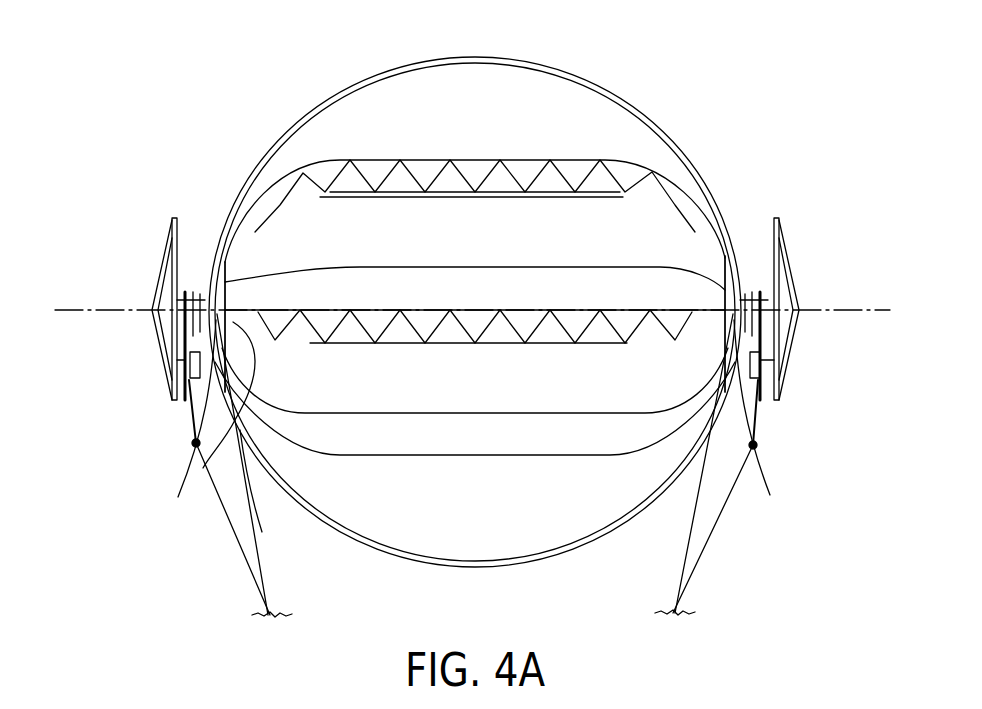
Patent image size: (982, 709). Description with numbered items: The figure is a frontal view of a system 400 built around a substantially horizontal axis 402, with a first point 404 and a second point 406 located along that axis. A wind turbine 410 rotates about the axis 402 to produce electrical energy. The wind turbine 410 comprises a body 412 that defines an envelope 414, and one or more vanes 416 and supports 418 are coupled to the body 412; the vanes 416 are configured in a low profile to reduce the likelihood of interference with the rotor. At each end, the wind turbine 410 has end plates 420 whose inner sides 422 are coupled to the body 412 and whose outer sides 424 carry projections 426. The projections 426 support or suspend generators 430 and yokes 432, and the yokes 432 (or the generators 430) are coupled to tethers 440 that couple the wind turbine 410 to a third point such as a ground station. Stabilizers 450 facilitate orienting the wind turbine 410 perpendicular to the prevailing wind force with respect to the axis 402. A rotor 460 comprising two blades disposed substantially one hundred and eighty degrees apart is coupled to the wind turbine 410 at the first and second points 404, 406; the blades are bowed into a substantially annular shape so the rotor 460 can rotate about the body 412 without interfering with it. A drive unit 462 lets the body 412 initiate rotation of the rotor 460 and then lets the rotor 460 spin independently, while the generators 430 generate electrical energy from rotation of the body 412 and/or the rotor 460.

The system 400 is at (112, 48).
The substantially horizontal axis 402 is at (140, 285).
The first point 404 is at (176, 218).
The second point 406 is at (776, 218).
The wind turbine 410 is at (417, 594).
The body 412 is at (462, 414).
The envelope 414 is at (508, 390).
The vanes 416 is at (543, 266).
The supports 418 is at (433, 182).
The end plates 420 is at (191, 276).
The inner sides 422 is at (213, 302).
The outer sides 424 is at (178, 497).
The projections 426 is at (160, 292).
The generators 430 is at (191, 412).
The yokes 432 is at (194, 445).
The tethers 440 is at (235, 535).
The stabilizers 450 is at (180, 362).
The rotor 460 is at (623, 100).
The drive unit 462 is at (248, 440).